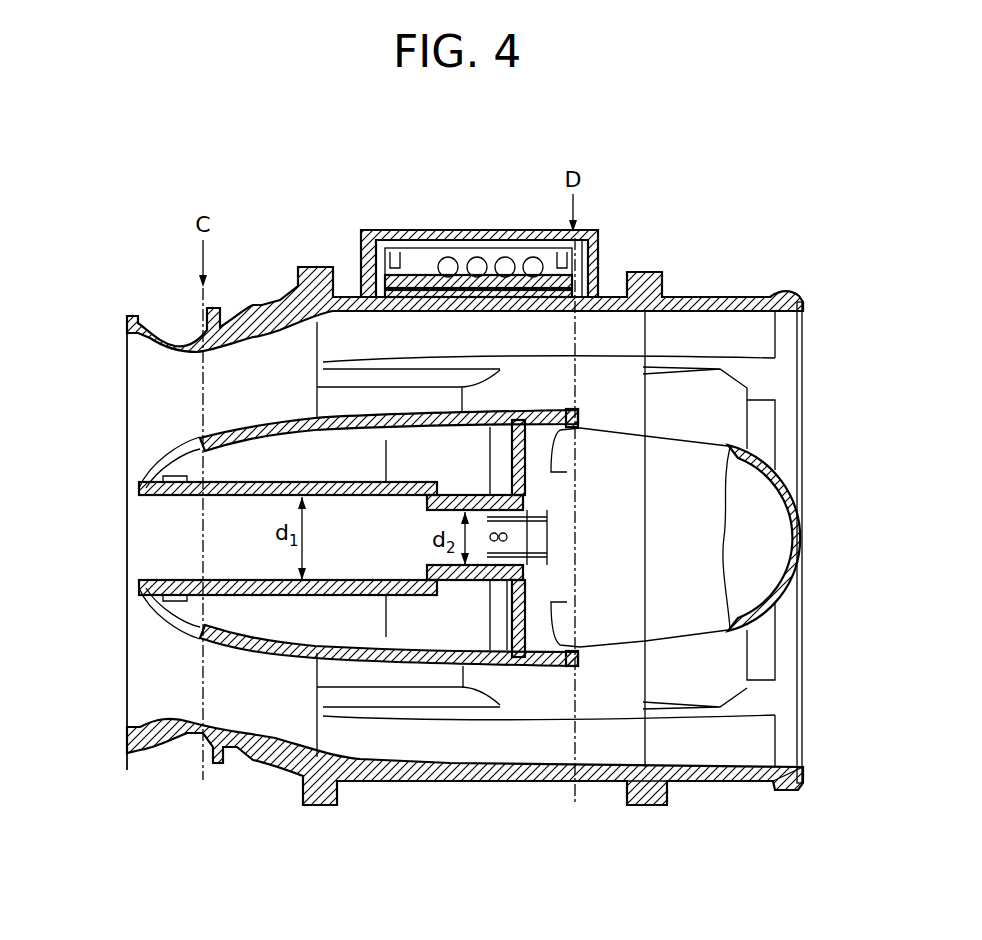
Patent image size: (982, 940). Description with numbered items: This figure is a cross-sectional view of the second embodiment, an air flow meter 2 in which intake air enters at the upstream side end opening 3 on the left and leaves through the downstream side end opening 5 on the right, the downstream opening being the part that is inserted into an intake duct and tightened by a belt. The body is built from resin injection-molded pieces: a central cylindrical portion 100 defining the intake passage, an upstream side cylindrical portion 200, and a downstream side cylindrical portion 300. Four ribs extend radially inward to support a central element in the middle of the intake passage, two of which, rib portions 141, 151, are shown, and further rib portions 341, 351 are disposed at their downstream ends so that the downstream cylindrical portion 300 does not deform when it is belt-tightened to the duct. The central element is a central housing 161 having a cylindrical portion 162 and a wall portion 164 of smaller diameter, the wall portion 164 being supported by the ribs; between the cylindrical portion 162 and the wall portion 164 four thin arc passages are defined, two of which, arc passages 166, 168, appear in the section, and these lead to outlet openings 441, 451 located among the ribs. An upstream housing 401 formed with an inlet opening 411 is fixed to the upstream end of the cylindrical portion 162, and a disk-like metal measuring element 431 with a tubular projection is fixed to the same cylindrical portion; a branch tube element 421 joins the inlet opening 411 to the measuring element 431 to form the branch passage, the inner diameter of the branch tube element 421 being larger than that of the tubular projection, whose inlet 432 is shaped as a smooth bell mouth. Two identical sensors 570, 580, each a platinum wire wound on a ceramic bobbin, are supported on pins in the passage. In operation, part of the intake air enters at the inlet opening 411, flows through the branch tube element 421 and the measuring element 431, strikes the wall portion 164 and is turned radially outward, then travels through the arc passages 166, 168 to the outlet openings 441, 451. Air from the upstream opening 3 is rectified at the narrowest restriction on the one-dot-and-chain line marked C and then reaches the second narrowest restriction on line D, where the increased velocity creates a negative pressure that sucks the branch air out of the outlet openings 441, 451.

The flow meter 2 is at (545, 173).
The upstream side end opening 3 is at (118, 454).
The downstream side end opening 5 is at (806, 425).
The central cylindrical portion 100 is at (428, 787).
The rib portion 141 is at (615, 358).
The rib portion 151 is at (618, 702).
The central housing 161 is at (523, 677).
The cylindrical portion 162 is at (497, 660).
The wall portion 164 is at (567, 602).
The arc passage 166 is at (602, 393).
The arc passage 168 is at (560, 660).
The upstream side cylindrical portion 200 is at (188, 756).
The downstream side cylindrical portion 300 is at (710, 790).
The rib portion 341 is at (697, 408).
The rib portion 351 is at (703, 678).
The upstream housing 401 is at (200, 437).
The inlet opening 411 is at (140, 557).
The branch tube element 421 is at (220, 493).
The measuring element 431 is at (462, 578).
The inlet 432 is at (427, 560).
The outlet opening 441 is at (580, 427).
The outlet opening 451 is at (580, 657).
The sensor 570 is at (545, 512).
The sensor 580 is at (497, 530).